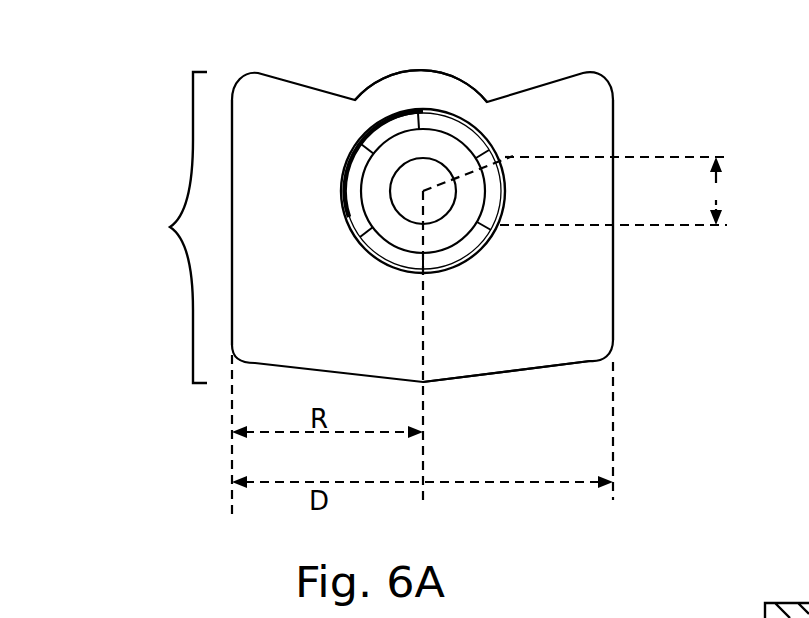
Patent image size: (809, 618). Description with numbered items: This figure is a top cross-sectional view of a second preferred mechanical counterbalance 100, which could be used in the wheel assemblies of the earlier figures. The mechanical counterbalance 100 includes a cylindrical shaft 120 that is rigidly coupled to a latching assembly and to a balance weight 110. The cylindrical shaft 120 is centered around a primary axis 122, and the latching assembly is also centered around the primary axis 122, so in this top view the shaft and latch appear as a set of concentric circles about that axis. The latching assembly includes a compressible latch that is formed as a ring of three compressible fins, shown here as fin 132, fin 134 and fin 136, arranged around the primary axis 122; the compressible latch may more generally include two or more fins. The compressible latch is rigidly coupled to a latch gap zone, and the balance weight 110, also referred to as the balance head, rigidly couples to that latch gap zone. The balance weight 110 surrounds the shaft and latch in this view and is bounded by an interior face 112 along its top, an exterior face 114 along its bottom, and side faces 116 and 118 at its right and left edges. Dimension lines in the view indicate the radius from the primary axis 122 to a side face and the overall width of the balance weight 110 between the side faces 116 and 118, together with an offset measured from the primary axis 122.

The mechanical counterbalance 100 is at (161, 227).
The balance weight 110 is at (546, 322).
The interior face 112 is at (418, 70).
The exterior face 114 is at (530, 370).
The side face 116 is at (613, 127).
The side face 118 is at (232, 223).
The cylindrical shaft 120 is at (719, 195).
The primary axis 122 is at (484, 153).
The fin 132 is at (497, 197).
The fin 134 is at (385, 256).
The fin 136 is at (384, 124).